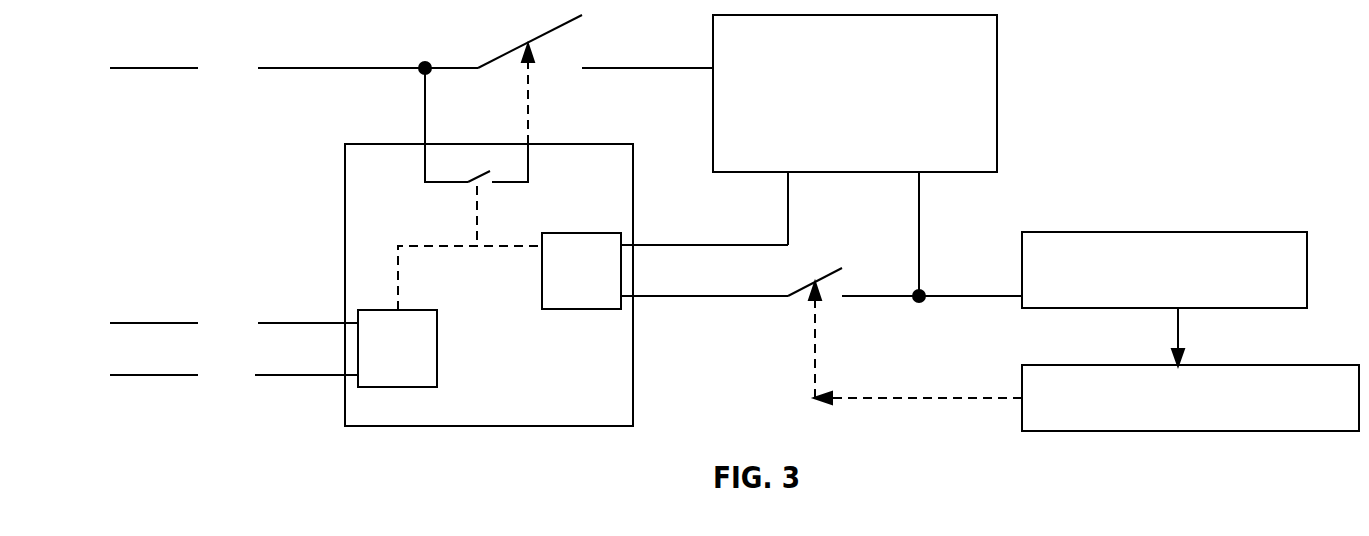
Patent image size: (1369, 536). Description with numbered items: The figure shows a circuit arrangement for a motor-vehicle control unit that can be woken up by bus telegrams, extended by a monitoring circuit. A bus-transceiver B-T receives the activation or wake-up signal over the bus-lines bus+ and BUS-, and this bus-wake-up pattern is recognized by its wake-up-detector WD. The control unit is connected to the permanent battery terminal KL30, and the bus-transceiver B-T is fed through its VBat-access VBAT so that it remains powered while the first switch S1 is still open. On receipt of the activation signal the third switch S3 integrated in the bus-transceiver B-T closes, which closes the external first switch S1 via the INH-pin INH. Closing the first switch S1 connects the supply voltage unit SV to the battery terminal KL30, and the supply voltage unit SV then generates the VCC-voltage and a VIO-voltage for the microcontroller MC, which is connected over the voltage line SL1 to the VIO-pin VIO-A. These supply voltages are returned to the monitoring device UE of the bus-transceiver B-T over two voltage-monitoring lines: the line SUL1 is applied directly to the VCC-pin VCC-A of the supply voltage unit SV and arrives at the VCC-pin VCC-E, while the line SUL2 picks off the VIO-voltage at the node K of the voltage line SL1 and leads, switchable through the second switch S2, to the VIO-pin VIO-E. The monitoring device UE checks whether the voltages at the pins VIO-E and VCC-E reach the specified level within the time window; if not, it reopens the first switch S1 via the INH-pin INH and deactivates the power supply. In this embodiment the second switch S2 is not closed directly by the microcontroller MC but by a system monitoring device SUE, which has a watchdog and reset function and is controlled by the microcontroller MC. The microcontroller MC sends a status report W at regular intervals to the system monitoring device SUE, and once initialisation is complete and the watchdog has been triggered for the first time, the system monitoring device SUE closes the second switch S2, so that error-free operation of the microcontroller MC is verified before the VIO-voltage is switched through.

The bus-transceiver B-T is at (489, 285).
The supply voltage unit SV is at (855, 93).
The microcontroller MC is at (1164, 270).
The system monitoring device SUE is at (1190, 398).
The wake-up-detector WD is at (450, 316).
The monitoring device UE is at (581, 271).
The battery terminal KL30 is at (411, 68).
The first switch S1 is at (530, 39).
The second switch S2 is at (905, 327).
The third switch S3 is at (496, 195).
The INH-pin INH is at (511, 95).
The VBat-access VBAT is at (419, 125).
The VCC-pin of the supply voltage unit VCC-A is at (790, 196).
The VIO-pin of the supply voltage unit VIO-A is at (935, 222).
The VCC-pin of the bus-transceiver VCC-E is at (704, 233).
The VIO-pin of the bus-transceiver VIO-E is at (821, 287).
The voltage line SL1 is at (922, 221).
The node K is at (924, 283).
The status report W is at (1192, 337).
The voltage-monitoring line SUL1 is at (735, 246).
The voltage-monitoring line SUL2 is at (683, 298).
The bus-line BUS- is at (234, 375).